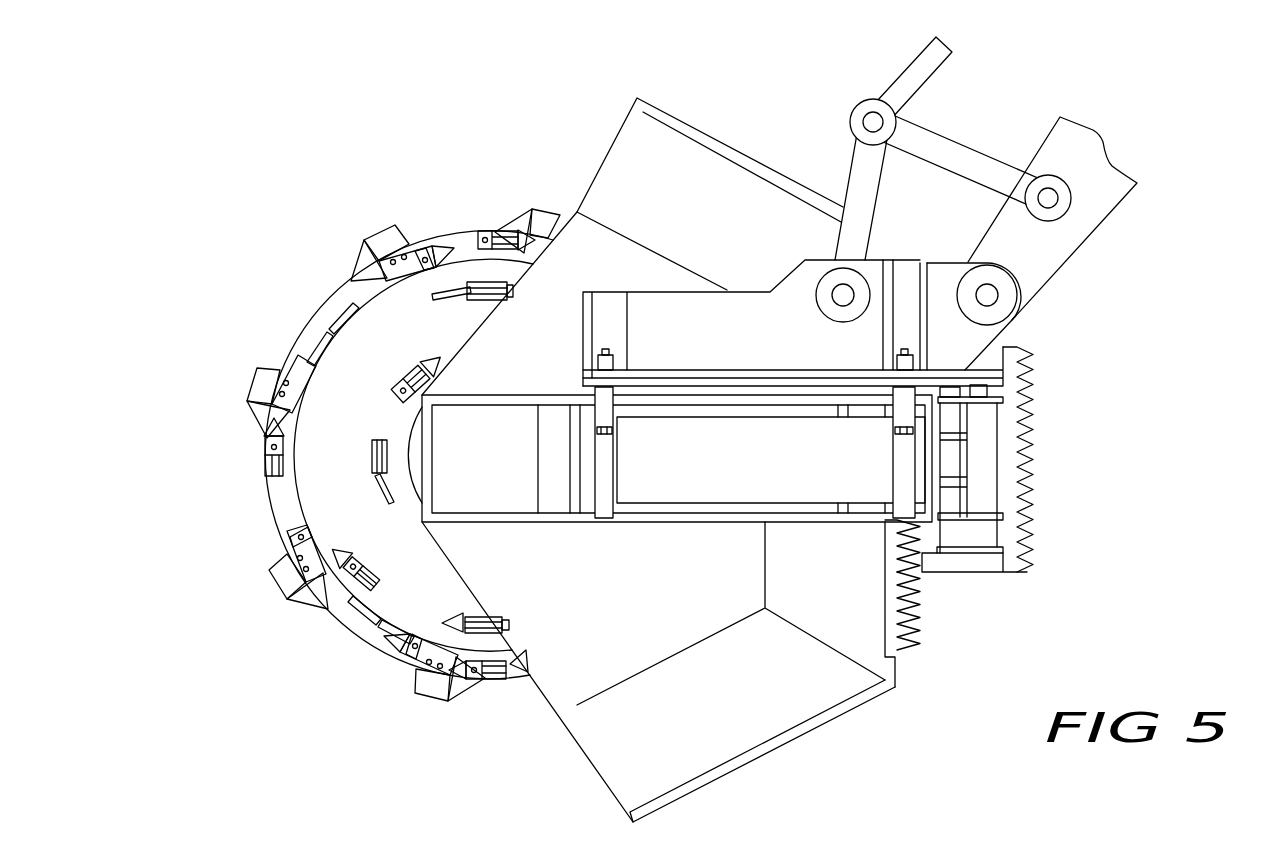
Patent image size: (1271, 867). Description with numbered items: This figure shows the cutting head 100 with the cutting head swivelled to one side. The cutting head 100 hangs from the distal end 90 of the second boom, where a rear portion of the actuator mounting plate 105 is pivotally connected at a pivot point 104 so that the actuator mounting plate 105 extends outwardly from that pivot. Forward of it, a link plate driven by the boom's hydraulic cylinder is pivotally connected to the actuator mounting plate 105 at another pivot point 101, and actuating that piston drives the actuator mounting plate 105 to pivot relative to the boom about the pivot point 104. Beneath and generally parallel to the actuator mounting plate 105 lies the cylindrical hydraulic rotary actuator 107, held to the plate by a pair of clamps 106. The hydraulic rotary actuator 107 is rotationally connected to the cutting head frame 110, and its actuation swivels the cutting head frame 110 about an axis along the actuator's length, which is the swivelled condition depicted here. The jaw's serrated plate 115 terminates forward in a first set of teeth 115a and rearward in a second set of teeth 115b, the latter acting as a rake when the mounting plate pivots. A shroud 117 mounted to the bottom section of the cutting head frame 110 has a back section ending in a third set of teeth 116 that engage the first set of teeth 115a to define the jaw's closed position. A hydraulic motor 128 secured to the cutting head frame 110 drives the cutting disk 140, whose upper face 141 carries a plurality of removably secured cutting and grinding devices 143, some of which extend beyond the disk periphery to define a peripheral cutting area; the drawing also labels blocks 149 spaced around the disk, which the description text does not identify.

The distal end 90 is at (1065, 238).
The cutting head 100 is at (418, 97).
The pivot point 101 is at (835, 290).
The pivot point 104 is at (992, 305).
The actuator mounting plate 105 is at (722, 343).
The clamps 106 is at (612, 452).
The hydraulic rotary actuator 107 is at (718, 486).
The cutting head frame 110 is at (592, 633).
The serrated plate 115 is at (983, 572).
The first set of teeth 115a is at (905, 553).
The second set of teeth 115b is at (1022, 508).
The third set of teeth 116 is at (910, 642).
The shroud 117 is at (770, 730).
The hydraulic motor 128 is at (467, 471).
The cutting disk 140 is at (324, 296).
The upper face 141 is at (355, 357).
The cutting and grinding devices 143 is at (466, 282).
The wedge blocks 149 is at (378, 242).